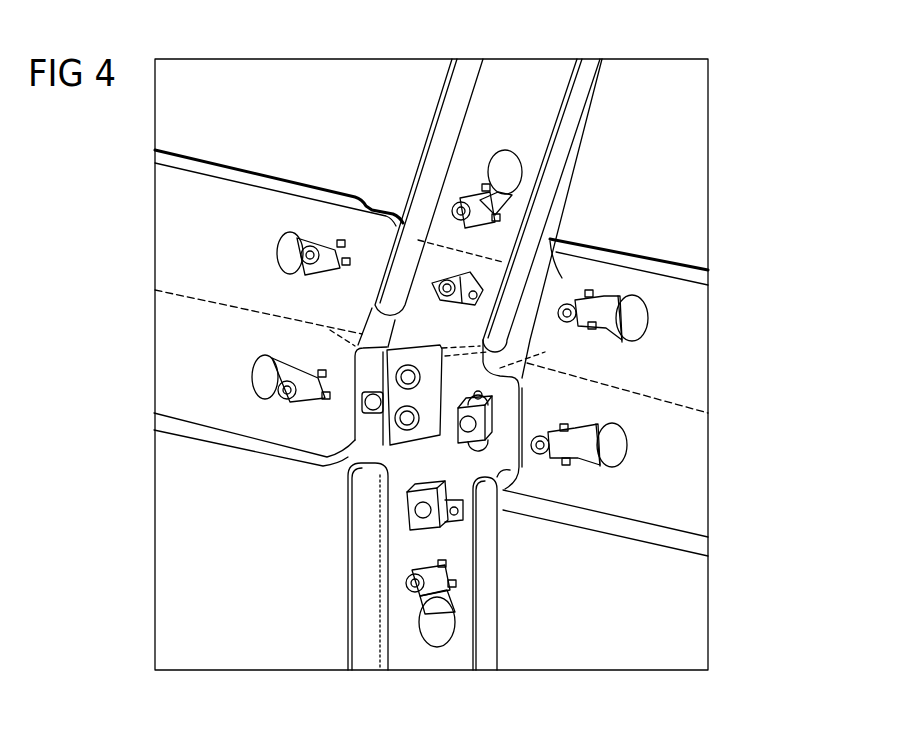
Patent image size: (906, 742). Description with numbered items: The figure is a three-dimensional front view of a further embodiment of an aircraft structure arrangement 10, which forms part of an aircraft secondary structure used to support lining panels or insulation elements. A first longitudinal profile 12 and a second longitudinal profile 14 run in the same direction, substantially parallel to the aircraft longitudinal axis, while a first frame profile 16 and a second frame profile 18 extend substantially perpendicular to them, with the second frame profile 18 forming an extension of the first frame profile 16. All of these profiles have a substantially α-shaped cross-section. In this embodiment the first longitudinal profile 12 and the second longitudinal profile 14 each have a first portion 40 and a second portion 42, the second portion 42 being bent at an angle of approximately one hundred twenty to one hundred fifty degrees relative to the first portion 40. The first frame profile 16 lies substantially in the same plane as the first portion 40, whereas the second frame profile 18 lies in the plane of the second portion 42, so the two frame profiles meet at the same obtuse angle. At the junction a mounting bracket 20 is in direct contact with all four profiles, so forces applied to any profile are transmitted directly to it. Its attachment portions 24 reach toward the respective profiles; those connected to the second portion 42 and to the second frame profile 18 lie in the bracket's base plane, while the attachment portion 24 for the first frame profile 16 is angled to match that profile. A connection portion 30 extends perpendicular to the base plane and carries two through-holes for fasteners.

The aircraft structure arrangement 10 is at (718, 104).
The first longitudinal profile 12 is at (213, 172).
The second longitudinal profile 14 is at (638, 264).
The first frame profile 16 is at (586, 82).
The second frame profile 18 is at (486, 636).
The mounting bracket 20 is at (492, 370).
The attachment portions 24 is at (425, 245).
The connection portion 30 is at (394, 442).
The first portion 40 is at (263, 210).
The second portion 42 is at (217, 428).